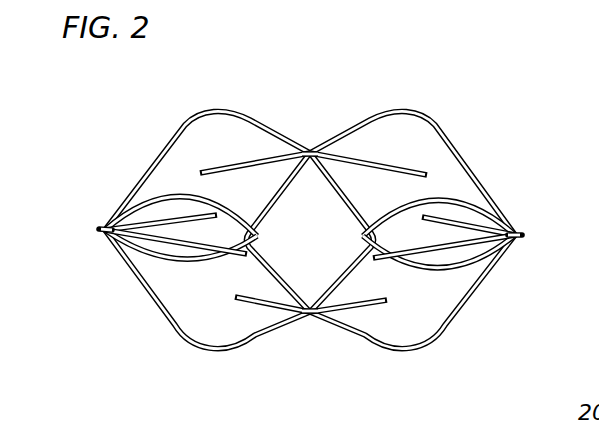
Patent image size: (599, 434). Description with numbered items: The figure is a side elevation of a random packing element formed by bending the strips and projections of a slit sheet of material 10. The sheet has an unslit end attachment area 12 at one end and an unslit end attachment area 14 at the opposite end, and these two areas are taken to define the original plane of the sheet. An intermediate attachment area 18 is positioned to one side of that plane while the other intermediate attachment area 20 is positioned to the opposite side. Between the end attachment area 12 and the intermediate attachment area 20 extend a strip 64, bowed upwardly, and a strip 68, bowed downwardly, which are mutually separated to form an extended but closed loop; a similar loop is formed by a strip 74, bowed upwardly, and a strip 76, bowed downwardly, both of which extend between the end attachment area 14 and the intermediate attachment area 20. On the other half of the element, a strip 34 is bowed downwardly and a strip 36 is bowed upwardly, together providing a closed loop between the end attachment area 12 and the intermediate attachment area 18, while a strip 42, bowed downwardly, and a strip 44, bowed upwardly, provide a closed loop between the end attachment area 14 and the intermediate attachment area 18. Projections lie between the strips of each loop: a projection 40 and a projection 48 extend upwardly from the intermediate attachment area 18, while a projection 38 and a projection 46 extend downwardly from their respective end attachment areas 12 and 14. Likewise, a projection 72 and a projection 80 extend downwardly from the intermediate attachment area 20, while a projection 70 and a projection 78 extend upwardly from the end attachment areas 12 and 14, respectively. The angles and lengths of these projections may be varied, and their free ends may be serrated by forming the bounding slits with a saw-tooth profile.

The sheet of material 10 is at (488, 89).
The end attachment area 12 is at (101, 227).
The end attachment area 14 is at (524, 234).
The intermediate attachment area 18 is at (308, 321).
The intermediate attachment area 20 is at (310, 150).
The strip 34 is at (190, 348).
The strip 36 is at (193, 197).
The projection 38 is at (193, 250).
The projection 40 is at (253, 307).
The strip 42 is at (459, 330).
The strip 44 is at (453, 200).
The projection 46 is at (480, 257).
The projection 48 is at (372, 307).
The strip 64 is at (158, 152).
The strip 68 is at (144, 257).
The projection 70 is at (152, 214).
The projection 72 is at (236, 166).
The strip 74 is at (466, 153).
The strip 76 is at (447, 270).
The projection 78 is at (476, 218).
The projection 80 is at (390, 163).